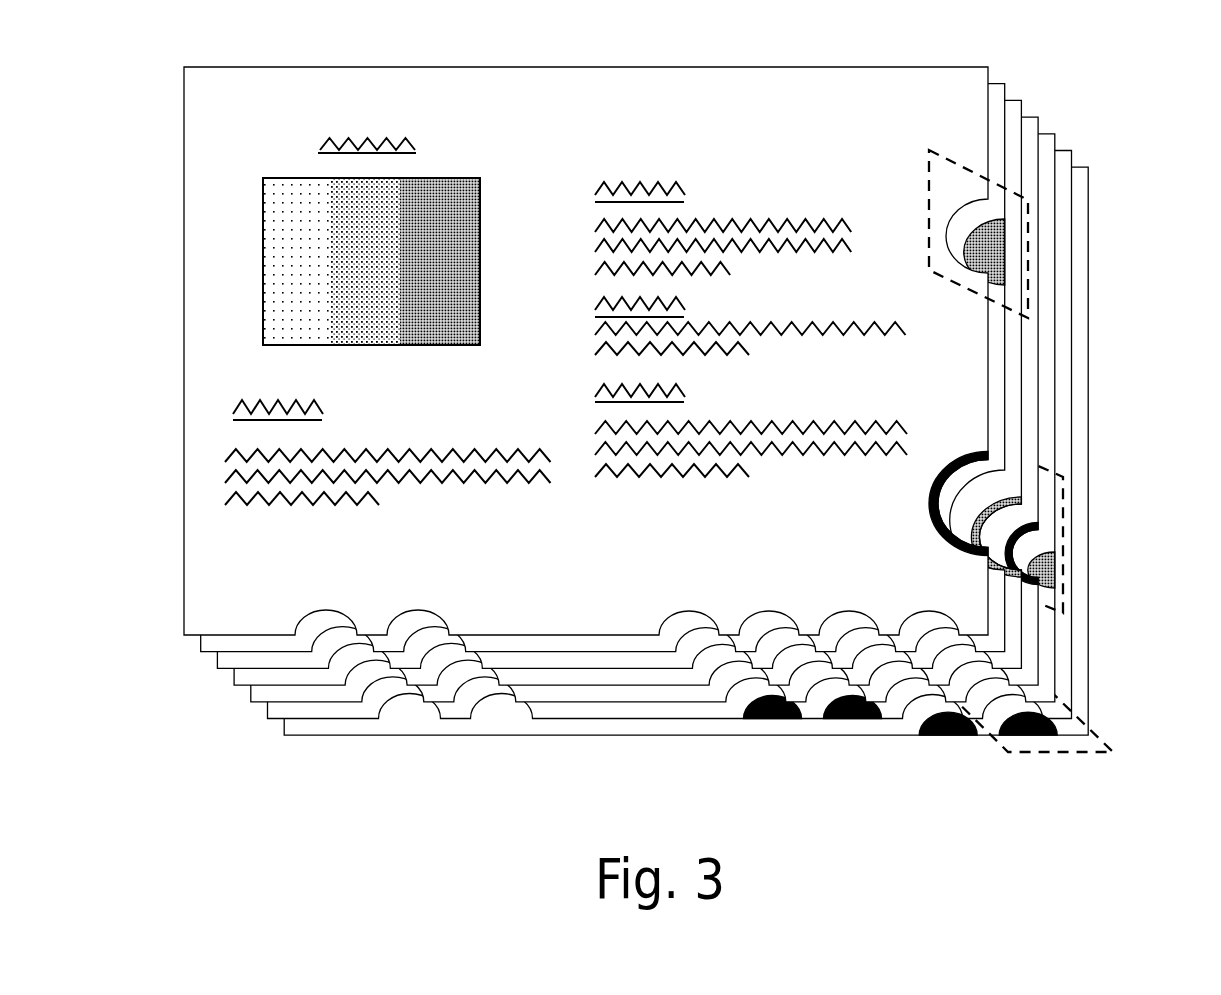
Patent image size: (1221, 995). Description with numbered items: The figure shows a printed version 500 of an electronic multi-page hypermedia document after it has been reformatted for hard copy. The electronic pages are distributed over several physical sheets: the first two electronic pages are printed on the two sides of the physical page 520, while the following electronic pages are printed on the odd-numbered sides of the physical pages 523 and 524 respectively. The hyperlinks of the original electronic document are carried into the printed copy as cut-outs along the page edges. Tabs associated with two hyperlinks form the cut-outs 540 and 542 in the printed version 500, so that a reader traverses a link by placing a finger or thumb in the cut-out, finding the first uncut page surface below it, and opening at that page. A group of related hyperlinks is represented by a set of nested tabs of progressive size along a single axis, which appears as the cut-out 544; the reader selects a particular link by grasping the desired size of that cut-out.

The printed version 500 is at (646, 420).
The physical page 520 is at (198, 558).
The physical page 523 is at (978, 215).
The physical page 524 is at (893, 708).
The cut-out 540 is at (1030, 287).
The cut-out 542 is at (1013, 752).
The cut-out 544 is at (1063, 560).